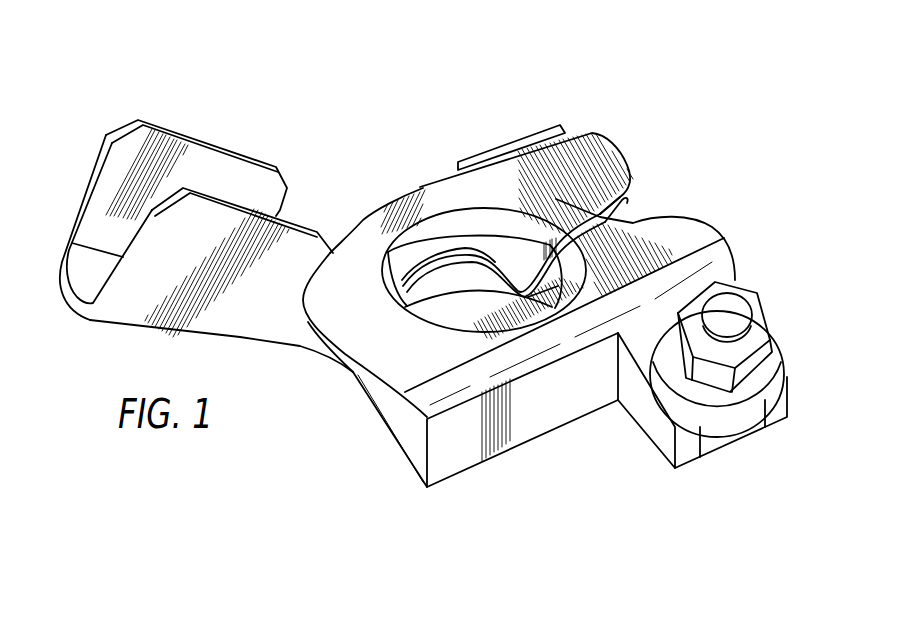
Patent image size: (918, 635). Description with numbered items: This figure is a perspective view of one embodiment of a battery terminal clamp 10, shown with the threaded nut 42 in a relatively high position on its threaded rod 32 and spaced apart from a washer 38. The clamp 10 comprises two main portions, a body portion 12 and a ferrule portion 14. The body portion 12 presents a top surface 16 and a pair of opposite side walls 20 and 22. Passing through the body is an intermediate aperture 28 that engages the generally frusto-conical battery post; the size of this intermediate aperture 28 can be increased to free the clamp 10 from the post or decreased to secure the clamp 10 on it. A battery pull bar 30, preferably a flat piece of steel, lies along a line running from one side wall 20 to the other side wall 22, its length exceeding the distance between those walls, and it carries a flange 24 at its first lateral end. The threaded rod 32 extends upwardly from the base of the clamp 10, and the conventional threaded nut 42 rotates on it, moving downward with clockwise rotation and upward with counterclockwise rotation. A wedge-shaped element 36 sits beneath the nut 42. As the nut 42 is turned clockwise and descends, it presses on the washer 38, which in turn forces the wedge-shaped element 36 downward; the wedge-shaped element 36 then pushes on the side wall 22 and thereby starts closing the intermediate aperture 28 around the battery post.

The battery terminal clamp 10 is at (137, 78).
The body portion 12 is at (485, 138).
The ferrule portion 14 is at (67, 320).
The top surface 16 is at (424, 358).
The side wall 20 is at (443, 173).
The side wall 22 is at (480, 432).
The flange 24 is at (532, 140).
The intermediate aperture 28 is at (453, 308).
The battery pull bar 30 is at (592, 223).
The threaded rod 32 is at (728, 317).
The wedge-shaped element 36 is at (642, 445).
The washer 38 is at (730, 430).
The threaded nut 42 is at (760, 338).